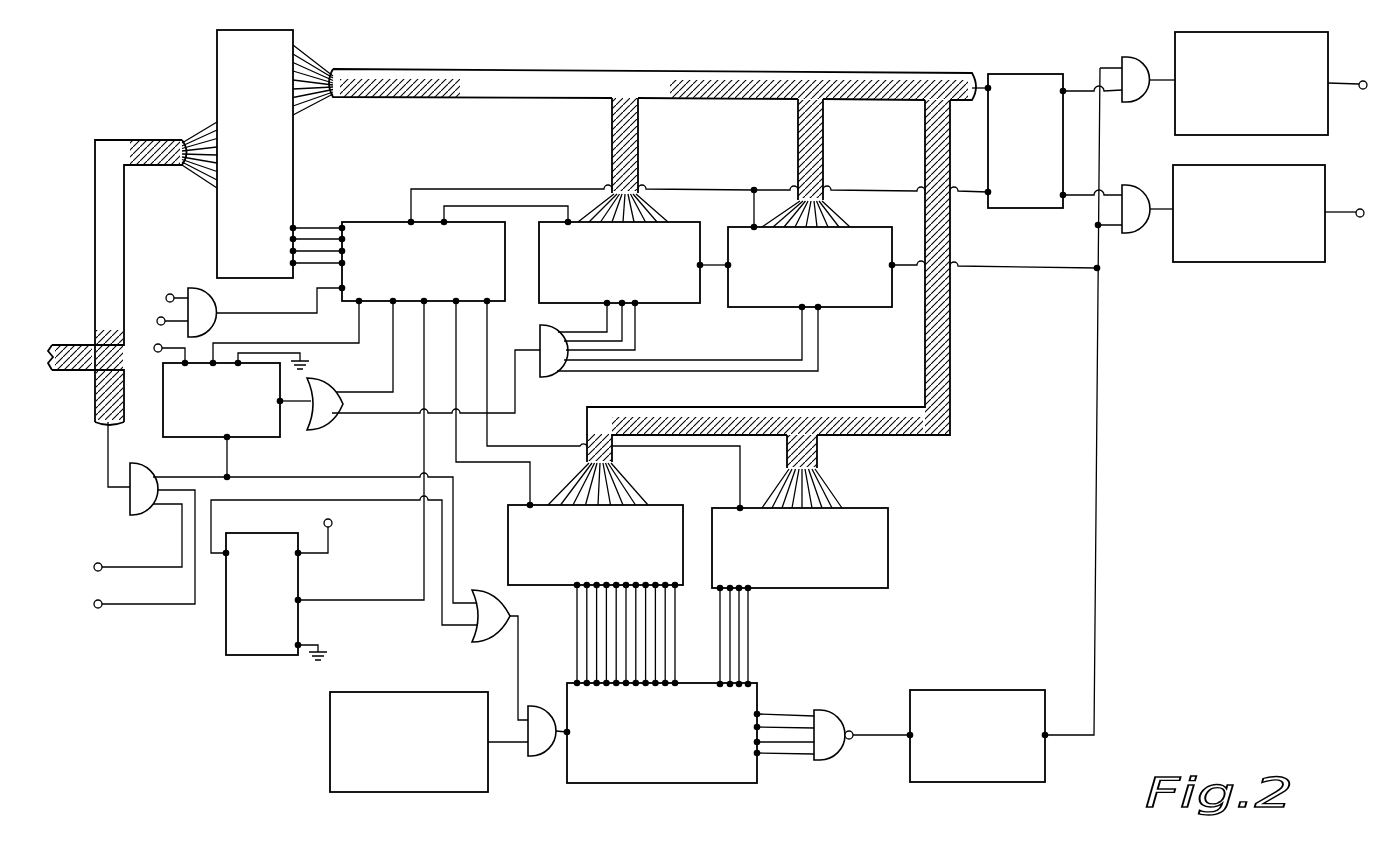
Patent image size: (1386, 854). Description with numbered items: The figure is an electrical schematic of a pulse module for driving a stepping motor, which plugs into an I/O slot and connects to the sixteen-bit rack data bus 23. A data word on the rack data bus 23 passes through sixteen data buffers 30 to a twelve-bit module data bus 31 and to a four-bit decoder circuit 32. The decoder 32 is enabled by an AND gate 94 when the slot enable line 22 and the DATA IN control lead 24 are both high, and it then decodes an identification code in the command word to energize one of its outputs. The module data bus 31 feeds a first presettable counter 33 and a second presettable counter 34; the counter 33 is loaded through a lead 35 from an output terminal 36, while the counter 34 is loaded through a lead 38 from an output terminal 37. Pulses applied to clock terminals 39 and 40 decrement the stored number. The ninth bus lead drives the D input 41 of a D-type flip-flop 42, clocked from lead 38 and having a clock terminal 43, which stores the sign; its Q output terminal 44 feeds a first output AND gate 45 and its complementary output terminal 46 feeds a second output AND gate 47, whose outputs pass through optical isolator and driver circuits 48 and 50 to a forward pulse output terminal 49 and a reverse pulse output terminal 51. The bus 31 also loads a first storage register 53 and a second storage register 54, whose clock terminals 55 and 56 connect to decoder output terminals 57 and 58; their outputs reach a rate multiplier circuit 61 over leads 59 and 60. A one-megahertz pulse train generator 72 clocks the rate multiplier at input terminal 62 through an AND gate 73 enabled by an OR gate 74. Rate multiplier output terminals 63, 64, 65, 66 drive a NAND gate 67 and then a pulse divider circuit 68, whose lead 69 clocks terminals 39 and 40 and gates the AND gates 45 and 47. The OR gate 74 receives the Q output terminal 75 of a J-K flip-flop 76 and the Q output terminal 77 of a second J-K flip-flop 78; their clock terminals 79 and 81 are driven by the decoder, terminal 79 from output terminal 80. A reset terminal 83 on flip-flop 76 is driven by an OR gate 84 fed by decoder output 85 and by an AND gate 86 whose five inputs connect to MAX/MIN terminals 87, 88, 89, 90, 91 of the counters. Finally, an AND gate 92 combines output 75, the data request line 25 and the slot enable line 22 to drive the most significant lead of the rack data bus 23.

The slot enable line 22 is at (174, 292).
The rack data bus 23 is at (87, 204).
The DATA IN control lead 24 is at (157, 321).
The data request line 25 is at (102, 561).
The data buffers 30 is at (294, 38).
The module data bus 31 is at (492, 68).
The four-bit decoder circuit 32 is at (362, 212).
The first presettable counter 33 is at (539, 258).
The second presettable counter 34 is at (873, 313).
The lead 35 is at (518, 205).
The output terminal 36 is at (443, 215).
The output terminal 37 is at (410, 218).
The lead 38 is at (719, 189).
The clock terminal 39 is at (711, 261).
The clock terminal 40 is at (894, 270).
The D input 41 is at (982, 86).
The D-type flip-flop 42 is at (1011, 148).
The clock input 43 is at (986, 197).
The Q output terminal 44 is at (1073, 88).
The first output AND gate 45 is at (1149, 62).
The Q-bar output terminal 46 is at (1095, 225).
The second output AND gate 47 is at (1139, 186).
The optical isolator and driver circuit 48 is at (1283, 30).
The forward pulse output terminal 49 is at (1363, 80).
The optical isolator and driver circuit 50 is at (1233, 263).
The reverse pulse output terminal 51 is at (1360, 209).
The first storage register 53 is at (673, 496).
The second storage register 54 is at (902, 531).
The clock terminal 55 is at (529, 503).
The clock terminal 56 is at (739, 506).
The output terminal 57 is at (426, 305).
The output terminal 58 is at (489, 305).
The leads 59 is at (688, 651).
The leads 60 is at (760, 641).
The rate multiplier circuit 61 is at (646, 795).
The input terminal 62 is at (557, 716).
The output terminal 63 is at (759, 755).
The output terminal 64 is at (759, 743).
The output terminal 65 is at (759, 726).
The output terminal 66 is at (759, 713).
The NAND gate 67 is at (840, 715).
The pulse divider circuit 68 is at (1034, 680).
The lead 69 is at (1098, 508).
The one-megahertz pulse train generator 72 is at (370, 686).
The AND gate 73 is at (545, 760).
The OR gate 74 is at (492, 590).
The Q output terminal 75 is at (229, 444).
The J-K flip-flop 76 is at (179, 420).
The Q output terminal 77 is at (226, 548).
The second J-K flip-flop 78 is at (236, 616).
The clock terminal 79 is at (214, 358).
The output terminal 80 is at (358, 305).
The clock terminal 81 is at (300, 598).
The reset terminal 83 is at (282, 405).
The OR gate 84 is at (341, 376).
The output 85 is at (394, 305).
The AND gate 86 is at (546, 378).
The MAX/MIN terminal 87 is at (607, 306).
The MAX/MIN terminal 88 is at (624, 308).
The MAX/MIN terminal 89 is at (637, 306).
The MAX/MIN terminal 90 is at (801, 310).
The MAX/MIN terminal 91 is at (818, 310).
The AND gate 92 is at (141, 466).
The AND gate 94 is at (221, 307).